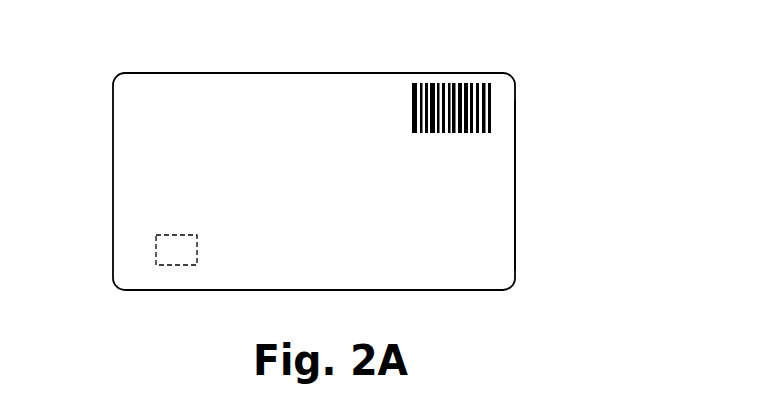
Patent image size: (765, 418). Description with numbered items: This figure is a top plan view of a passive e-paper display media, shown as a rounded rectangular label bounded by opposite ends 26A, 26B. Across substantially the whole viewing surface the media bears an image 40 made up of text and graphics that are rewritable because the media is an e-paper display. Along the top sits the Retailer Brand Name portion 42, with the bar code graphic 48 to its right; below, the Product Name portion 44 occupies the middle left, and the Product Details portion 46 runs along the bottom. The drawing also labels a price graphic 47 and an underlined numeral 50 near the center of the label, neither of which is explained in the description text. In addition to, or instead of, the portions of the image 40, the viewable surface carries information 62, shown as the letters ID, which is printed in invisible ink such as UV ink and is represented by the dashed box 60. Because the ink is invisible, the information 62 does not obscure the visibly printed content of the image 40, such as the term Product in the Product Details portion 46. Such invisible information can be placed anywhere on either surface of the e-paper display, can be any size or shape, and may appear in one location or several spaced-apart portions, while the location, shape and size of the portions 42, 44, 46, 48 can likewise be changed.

The end 26A is at (113, 112).
The end 26B is at (514, 235).
The image 40 is at (186, 79).
The Retailer Brand Name portion 42 is at (274, 88).
The Product Name portion 44 is at (157, 193).
The Product Details portion 46 is at (297, 253).
The price 47 is at (447, 177).
The bar code graphic 48 is at (452, 92).
The label 50 is at (325, 153).
The dashed box 60 is at (187, 265).
The information 62 is at (178, 262).